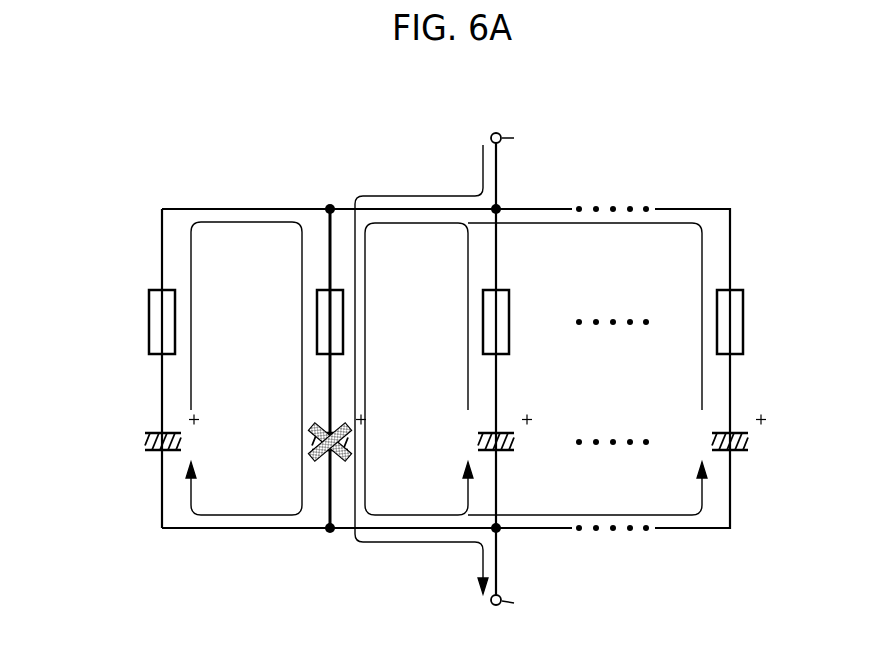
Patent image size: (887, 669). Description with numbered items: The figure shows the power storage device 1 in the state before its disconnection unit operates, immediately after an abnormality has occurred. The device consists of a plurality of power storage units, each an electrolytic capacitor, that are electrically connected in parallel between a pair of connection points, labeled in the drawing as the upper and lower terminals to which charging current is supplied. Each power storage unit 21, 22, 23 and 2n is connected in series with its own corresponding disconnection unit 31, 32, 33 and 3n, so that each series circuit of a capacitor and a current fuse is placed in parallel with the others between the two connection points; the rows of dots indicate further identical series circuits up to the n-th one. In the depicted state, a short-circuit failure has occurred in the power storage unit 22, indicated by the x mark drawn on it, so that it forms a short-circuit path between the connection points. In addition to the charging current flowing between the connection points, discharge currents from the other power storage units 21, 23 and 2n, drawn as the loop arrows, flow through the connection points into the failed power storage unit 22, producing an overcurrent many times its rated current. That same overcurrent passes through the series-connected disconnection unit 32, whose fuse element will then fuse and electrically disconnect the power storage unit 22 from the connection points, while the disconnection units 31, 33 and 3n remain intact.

The power storage device 1 is at (350, 161).
The power storage unit 21 is at (146, 443).
The power storage unit 22 is at (311, 440).
The power storage unit 23 is at (514, 445).
The power storage unit 2n is at (745, 440).
The disconnection unit 31 is at (152, 318).
The disconnection unit 32 is at (317, 304).
The disconnection unit 33 is at (503, 302).
The disconnection unit 3n is at (738, 325).